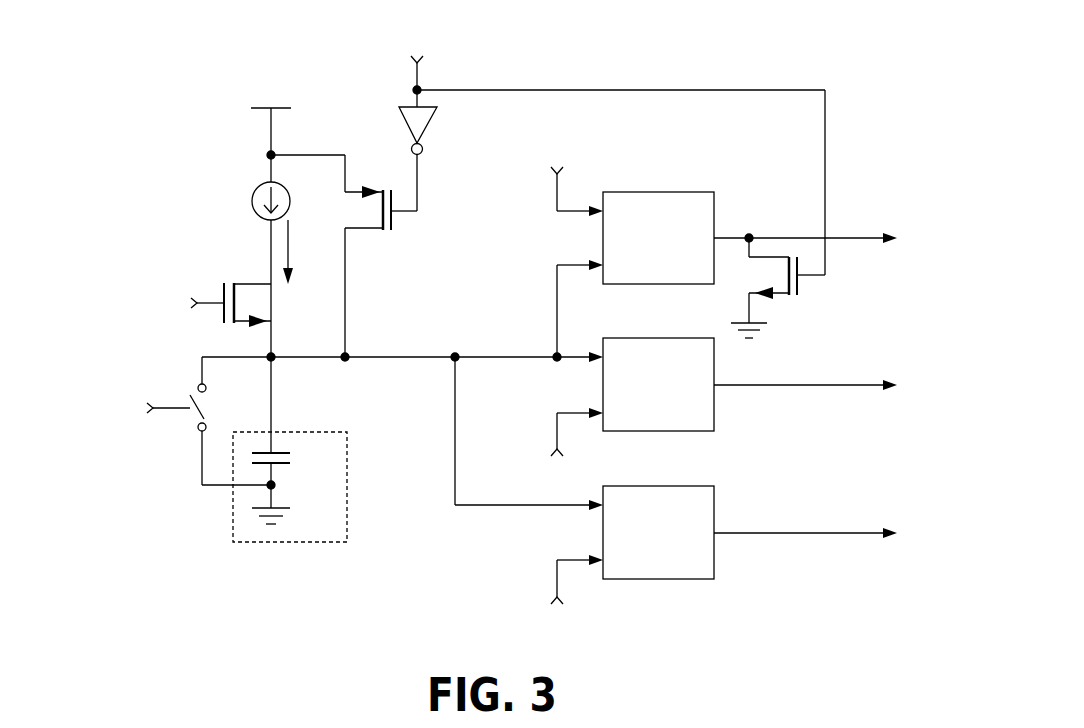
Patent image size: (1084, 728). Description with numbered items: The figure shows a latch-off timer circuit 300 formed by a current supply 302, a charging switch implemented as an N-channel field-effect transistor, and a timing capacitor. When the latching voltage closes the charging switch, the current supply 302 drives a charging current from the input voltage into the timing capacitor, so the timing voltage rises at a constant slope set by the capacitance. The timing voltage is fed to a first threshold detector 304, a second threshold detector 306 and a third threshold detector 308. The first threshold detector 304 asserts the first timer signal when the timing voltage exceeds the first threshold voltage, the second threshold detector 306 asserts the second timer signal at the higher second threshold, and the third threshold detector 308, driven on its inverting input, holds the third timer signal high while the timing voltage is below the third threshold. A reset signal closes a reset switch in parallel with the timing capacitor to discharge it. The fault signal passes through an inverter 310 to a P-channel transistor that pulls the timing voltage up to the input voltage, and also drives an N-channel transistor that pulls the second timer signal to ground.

The latch-off timer circuit 300 is at (138, 46).
The current supply 302 is at (256, 193).
The first threshold detector 304 is at (658, 486).
The second threshold detector 306 is at (658, 192).
The third threshold detector 308 is at (658, 338).
The inverter 310 is at (425, 124).